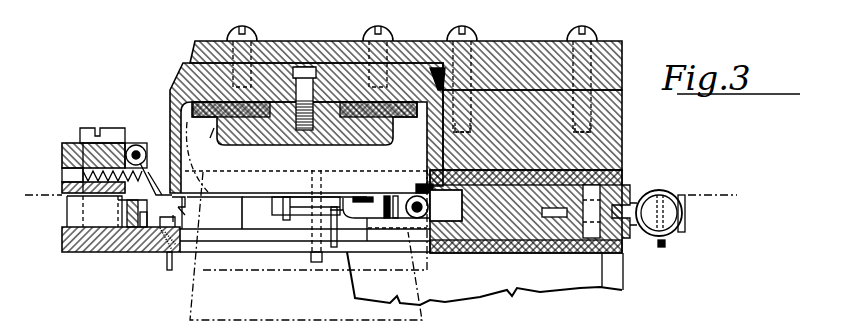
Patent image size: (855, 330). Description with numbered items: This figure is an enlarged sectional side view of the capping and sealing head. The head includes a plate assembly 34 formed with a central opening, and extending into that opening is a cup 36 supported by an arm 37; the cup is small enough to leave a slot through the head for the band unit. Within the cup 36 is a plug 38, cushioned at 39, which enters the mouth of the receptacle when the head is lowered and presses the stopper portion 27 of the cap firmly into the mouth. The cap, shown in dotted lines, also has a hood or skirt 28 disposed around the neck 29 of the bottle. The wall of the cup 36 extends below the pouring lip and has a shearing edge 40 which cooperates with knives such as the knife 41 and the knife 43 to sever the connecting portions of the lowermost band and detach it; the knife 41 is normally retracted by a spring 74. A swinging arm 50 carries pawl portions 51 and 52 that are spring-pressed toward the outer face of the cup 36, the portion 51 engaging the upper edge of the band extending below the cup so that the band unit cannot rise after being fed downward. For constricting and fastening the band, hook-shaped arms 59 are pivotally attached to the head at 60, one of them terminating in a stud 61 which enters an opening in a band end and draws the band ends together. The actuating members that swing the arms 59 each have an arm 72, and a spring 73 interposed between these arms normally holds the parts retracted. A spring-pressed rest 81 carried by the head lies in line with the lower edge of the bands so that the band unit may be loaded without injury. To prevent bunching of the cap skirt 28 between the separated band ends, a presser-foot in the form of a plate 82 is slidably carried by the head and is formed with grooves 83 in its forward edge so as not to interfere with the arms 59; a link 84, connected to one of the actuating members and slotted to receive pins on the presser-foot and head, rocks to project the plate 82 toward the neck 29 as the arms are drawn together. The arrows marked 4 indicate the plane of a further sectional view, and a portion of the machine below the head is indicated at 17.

The section line 4- 4 is at (39, 185).
The machine frame 17 is at (540, 278).
The stopper portion 27 is at (203, 157).
The hood or skirt 28 is at (189, 272).
The neck 29 is at (206, 206).
The plate assembly 34 is at (532, 130).
The cup 36 is at (170, 92).
The arm 37 is at (413, 47).
The plug 38 is at (304, 116).
The cushion 39 is at (261, 106).
The shearing edge 40 is at (193, 194).
The knife 41 is at (385, 196).
The knife 43 is at (158, 230).
The swinging arm 50 is at (152, 148).
The pawl portion 51 is at (186, 213).
The pawl portion 52 is at (163, 168).
The hook-shaped arm 59 is at (67, 206).
The pivot 60 is at (99, 131).
The stud 61 is at (416, 172).
The arm 72 is at (685, 227).
The spring 73 is at (661, 247).
The spring 74 is at (298, 216).
The spring-pressed rest 81 is at (167, 255).
The plate 82 is at (503, 210).
The grooves 83 is at (458, 197).
The link 84 is at (587, 210).